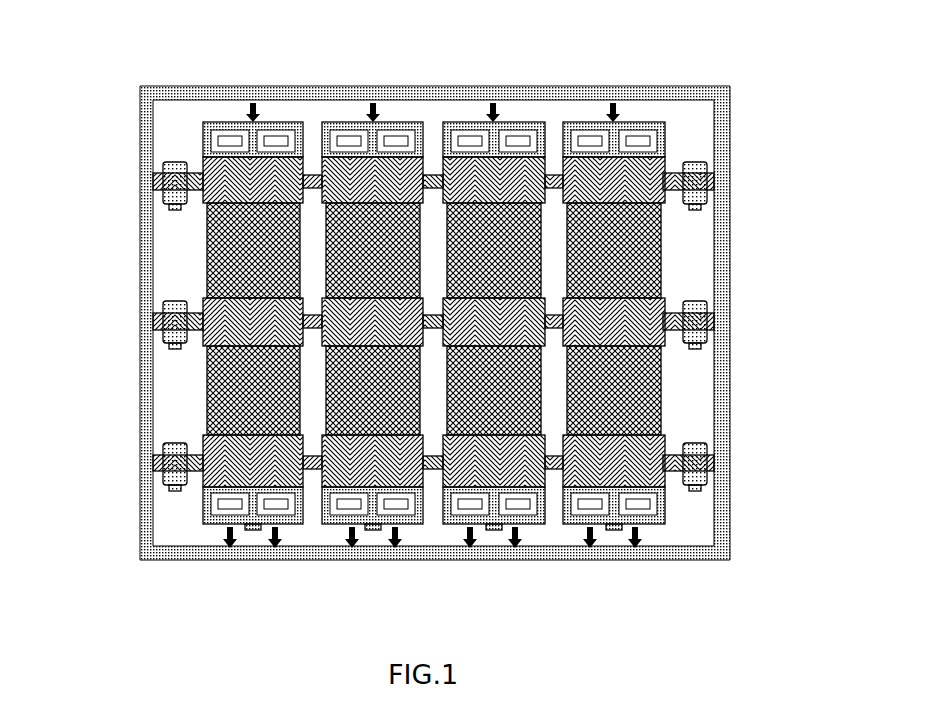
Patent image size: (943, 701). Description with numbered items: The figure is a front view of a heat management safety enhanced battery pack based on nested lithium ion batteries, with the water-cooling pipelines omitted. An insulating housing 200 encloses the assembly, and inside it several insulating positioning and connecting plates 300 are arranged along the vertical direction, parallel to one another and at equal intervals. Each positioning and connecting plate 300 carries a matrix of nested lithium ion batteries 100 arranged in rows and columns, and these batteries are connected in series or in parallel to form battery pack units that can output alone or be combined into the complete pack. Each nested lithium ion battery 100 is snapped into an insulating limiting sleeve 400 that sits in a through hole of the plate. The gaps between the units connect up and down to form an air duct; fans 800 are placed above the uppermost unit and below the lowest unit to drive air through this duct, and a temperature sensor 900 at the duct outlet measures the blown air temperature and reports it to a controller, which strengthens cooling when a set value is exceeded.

The nested lithium ion battery 100 is at (210, 258).
The insulating housing 200 is at (683, 86).
The insulating positioning and connecting plate 300 is at (660, 183).
The insulating limiting sleeve 400 is at (663, 443).
The fan 800 is at (228, 138).
The temperature sensor 900 is at (374, 528).